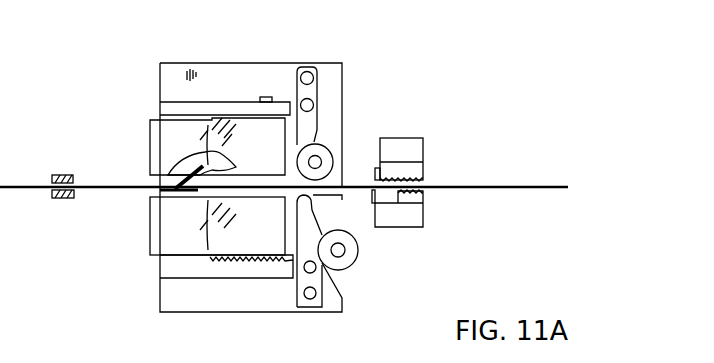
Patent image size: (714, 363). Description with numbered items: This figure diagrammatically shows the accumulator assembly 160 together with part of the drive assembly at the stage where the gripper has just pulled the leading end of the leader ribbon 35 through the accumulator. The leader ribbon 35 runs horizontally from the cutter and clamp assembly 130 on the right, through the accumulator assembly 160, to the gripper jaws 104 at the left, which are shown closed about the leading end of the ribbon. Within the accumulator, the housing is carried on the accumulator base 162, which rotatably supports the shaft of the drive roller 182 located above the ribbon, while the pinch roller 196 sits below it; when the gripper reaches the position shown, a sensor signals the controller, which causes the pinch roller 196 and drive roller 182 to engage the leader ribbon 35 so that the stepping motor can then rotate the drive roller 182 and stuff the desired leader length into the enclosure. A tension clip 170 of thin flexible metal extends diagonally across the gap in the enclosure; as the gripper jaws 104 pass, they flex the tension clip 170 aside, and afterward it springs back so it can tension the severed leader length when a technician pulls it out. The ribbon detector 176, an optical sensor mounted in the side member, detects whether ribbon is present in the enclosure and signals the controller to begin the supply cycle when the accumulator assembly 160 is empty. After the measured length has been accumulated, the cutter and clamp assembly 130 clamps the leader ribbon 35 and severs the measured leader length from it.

The leader ribbon 35 is at (515, 187).
The gripper jaws 104 is at (65, 176).
The cutter and clamp assembly 130 is at (437, 140).
The accumulator assembly 160 is at (252, 167).
The accumulator base 162 is at (220, 67).
The tension clip 170 is at (228, 165).
The ribbon detector 176 is at (267, 98).
The drive roller 182 is at (332, 153).
The pinch roller 196 is at (347, 252).